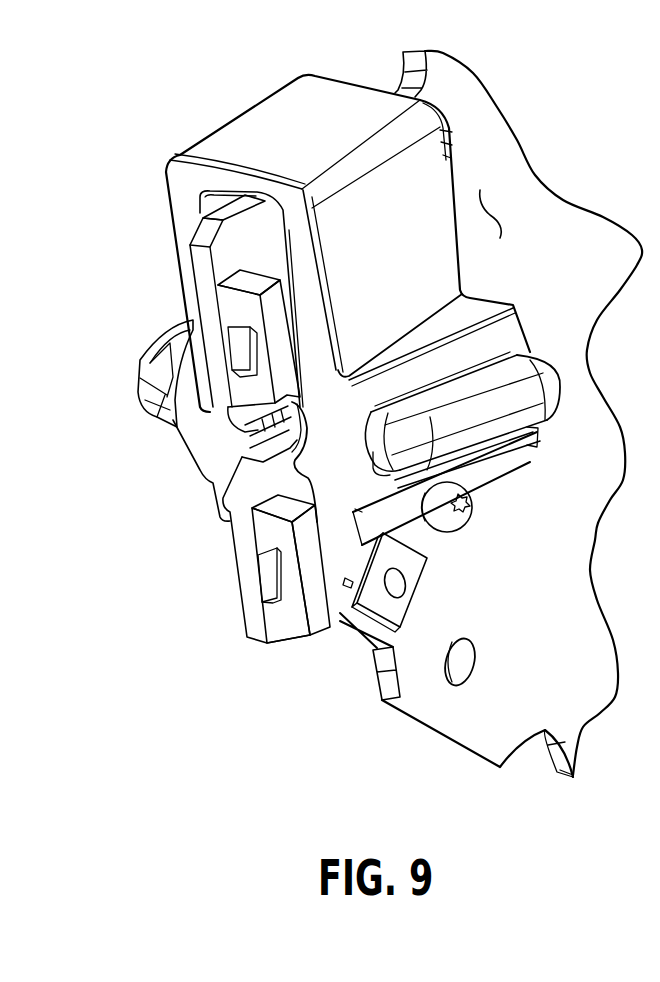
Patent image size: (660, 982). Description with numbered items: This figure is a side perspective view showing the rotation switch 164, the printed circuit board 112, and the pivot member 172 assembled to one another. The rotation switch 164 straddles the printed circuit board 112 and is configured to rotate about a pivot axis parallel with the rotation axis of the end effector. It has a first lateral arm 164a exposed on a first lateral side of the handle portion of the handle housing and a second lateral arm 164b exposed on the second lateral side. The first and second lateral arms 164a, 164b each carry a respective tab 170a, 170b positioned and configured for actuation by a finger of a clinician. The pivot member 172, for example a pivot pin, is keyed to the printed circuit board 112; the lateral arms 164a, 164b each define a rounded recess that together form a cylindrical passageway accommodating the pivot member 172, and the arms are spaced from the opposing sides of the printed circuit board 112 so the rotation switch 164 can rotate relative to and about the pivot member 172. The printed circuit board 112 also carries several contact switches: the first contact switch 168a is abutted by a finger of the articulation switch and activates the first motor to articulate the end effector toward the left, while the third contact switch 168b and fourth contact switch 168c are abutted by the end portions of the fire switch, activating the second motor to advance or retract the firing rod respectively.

The printed circuit board 112 is at (492, 208).
The rotation switch 164 is at (257, 96).
The first lateral arm 164a is at (172, 205).
The second lateral arm 164b is at (380, 203).
The first contact switch 168a is at (393, 613).
The third contact switch 168b is at (234, 331).
The fourth contact switch 168c is at (280, 590).
The tab 170a is at (137, 380).
The tab 170b is at (563, 382).
The pivot member 172 is at (262, 433).